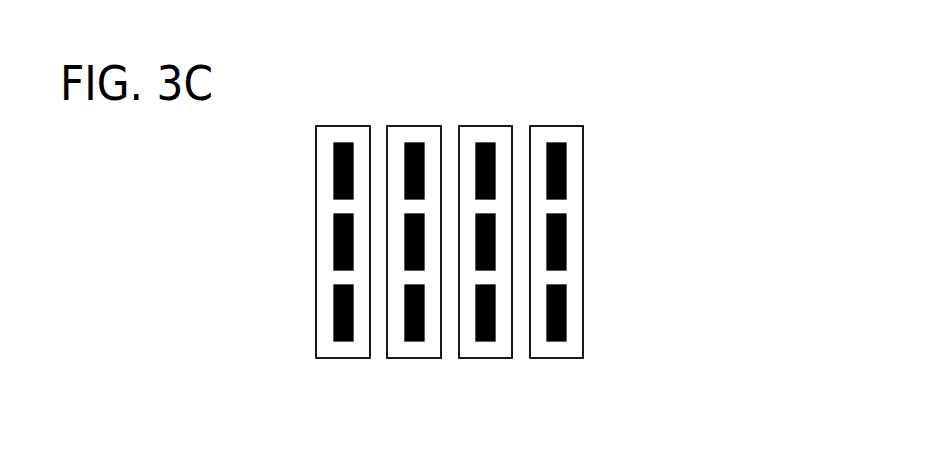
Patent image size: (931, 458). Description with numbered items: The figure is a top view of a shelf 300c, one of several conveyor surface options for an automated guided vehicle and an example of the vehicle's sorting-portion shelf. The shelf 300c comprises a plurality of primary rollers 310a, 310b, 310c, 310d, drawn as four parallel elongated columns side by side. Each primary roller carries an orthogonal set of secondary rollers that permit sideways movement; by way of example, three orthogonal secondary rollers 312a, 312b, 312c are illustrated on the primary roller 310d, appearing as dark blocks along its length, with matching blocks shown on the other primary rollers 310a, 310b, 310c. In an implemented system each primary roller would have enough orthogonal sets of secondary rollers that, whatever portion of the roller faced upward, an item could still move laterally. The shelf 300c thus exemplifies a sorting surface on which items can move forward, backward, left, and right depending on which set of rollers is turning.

The shelf 300c is at (601, 67).
The primary roller 310a is at (343, 358).
The primary roller 310b is at (417, 358).
The primary roller 310c is at (487, 358).
The primary roller 310d is at (562, 358).
The orthogonal secondary roller 312a is at (566, 172).
The orthogonal secondary roller 312b is at (566, 245).
The orthogonal secondary roller 312c is at (566, 315).